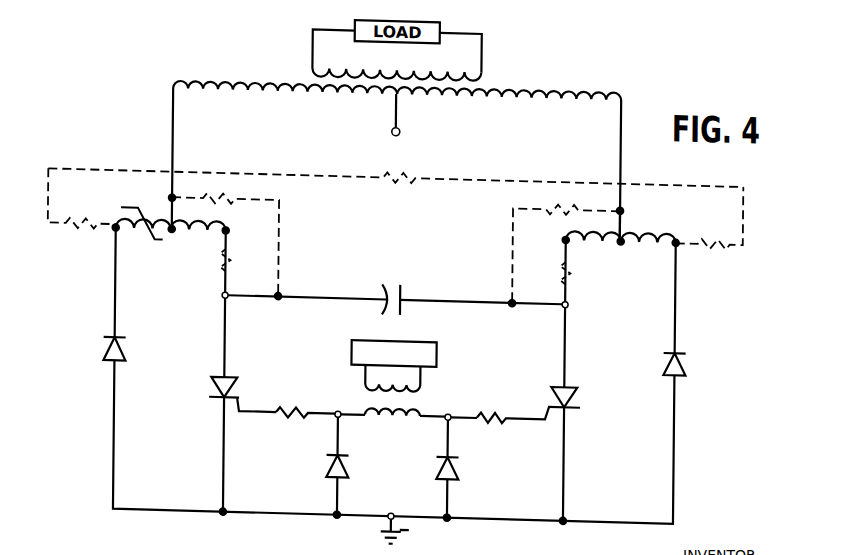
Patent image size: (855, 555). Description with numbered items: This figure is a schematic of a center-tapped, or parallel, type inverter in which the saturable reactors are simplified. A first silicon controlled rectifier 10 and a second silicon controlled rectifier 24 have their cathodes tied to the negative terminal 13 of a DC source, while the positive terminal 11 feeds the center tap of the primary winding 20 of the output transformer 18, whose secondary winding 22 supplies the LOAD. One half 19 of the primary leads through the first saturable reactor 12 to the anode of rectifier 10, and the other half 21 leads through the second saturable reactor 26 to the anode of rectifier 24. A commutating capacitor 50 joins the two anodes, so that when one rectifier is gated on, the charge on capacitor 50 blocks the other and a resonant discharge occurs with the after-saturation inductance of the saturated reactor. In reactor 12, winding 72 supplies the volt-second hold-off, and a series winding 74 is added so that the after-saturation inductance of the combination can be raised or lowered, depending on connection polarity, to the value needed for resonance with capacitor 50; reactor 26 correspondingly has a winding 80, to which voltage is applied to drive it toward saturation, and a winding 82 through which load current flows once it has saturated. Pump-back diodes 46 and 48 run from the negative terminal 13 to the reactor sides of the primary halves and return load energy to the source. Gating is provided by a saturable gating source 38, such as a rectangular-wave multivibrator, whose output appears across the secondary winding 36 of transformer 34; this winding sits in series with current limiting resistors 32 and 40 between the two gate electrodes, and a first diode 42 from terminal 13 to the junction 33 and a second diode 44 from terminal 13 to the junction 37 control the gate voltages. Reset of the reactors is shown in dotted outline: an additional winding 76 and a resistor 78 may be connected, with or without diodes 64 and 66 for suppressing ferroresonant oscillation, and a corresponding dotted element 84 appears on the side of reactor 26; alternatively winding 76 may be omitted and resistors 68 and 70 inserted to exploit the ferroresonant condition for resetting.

The first silicon controlled rectifier 10 is at (244, 392).
The positive terminal 11 is at (393, 122).
The first saturable reactor 12 is at (191, 224).
The negative terminal 13 is at (394, 502).
The center-tapped output transformer 18 is at (397, 103).
The half of primary winding 19 is at (270, 86).
The primary winding 20 is at (397, 136).
The other half of primary winding 21 is at (518, 89).
The load winding 22 is at (433, 55).
The second silicon controlled rectifier 24 is at (550, 388).
The second saturable reactor 26 is at (604, 245).
The current limiting resistor 32 is at (308, 400).
The junction 33 is at (336, 409).
The transformer 34 is at (397, 390).
The secondary winding 36 is at (372, 396).
The junction 37 is at (444, 408).
The gating source 38 is at (437, 340).
The current limiting resistor 40 is at (487, 400).
The first diode 42 is at (330, 455).
The second diode 44 is at (459, 465).
The pump-back diode 46 is at (129, 345).
The pump-back diode 48 is at (665, 345).
The commutating capacitor 50 is at (405, 282).
The diode 64 is at (237, 257).
The diode 66 is at (559, 257).
The resistor 68 is at (232, 191).
The resistor 70 is at (555, 193).
The winding 72 is at (227, 215).
The winding 74 is at (152, 218).
The additional winding 76 is at (95, 212).
The resistor 78 is at (404, 166).
The winding 80 is at (577, 217).
The winding 82 is at (629, 218).
The control winding 84 is at (694, 223).